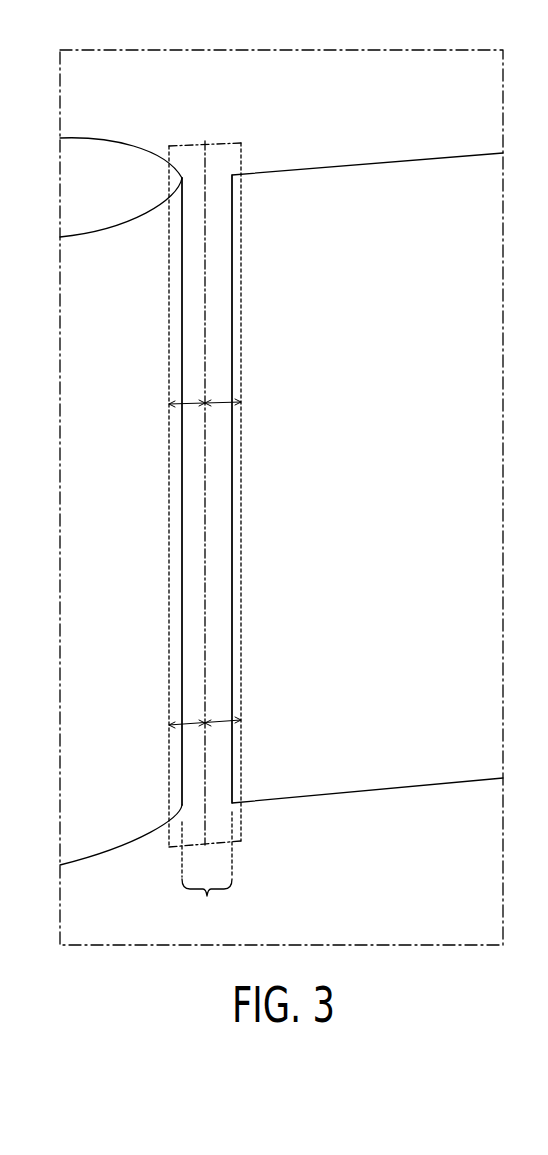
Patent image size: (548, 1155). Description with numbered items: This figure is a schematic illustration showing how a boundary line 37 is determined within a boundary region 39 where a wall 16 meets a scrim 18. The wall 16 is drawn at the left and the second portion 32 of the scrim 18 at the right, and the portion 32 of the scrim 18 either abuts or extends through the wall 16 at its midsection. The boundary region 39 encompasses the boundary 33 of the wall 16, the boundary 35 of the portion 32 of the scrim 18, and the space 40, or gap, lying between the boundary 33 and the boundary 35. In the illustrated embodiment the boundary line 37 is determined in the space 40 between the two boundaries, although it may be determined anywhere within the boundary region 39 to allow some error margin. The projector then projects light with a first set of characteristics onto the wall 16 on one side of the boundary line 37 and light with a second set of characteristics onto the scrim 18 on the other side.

The wall 16 is at (88, 153).
The scrim 18 is at (367, 465).
The second portion of the scrim 32 is at (437, 157).
The boundary of the wall 33 is at (182, 603).
The boundary of the portion of the scrim 35 is at (229, 649).
The boundary line 37 is at (205, 485).
The boundary region 39 is at (224, 456).
The space 40 is at (207, 870).